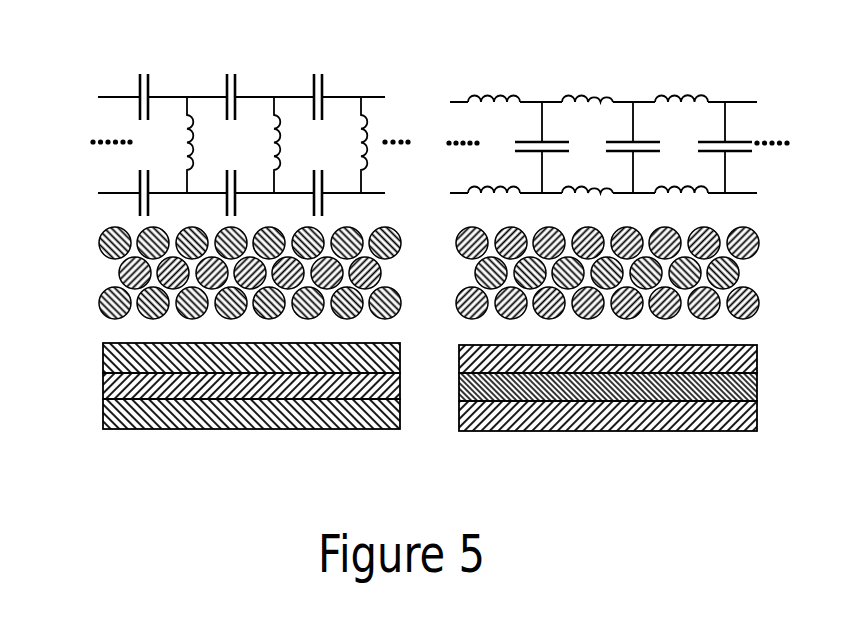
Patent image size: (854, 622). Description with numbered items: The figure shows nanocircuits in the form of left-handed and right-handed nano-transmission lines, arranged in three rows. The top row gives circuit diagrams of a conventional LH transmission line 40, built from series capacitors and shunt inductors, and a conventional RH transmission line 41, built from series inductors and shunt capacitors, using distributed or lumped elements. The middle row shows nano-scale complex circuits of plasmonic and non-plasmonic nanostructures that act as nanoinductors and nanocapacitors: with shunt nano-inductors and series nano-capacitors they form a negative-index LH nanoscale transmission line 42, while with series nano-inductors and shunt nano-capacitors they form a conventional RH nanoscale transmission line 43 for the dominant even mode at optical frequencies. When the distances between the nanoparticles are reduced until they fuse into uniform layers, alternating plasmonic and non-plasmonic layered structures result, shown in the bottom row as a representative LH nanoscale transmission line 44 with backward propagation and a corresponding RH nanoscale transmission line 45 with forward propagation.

The left-handed transmission line 40 is at (279, 68).
The right-handed transmission line 41 is at (637, 72).
The left-handed nanoscale transmission line 42 is at (88, 306).
The right-handed nanoscale transmission line 43 is at (778, 308).
The LH nanoscale transmission line 44 is at (92, 388).
The RH nanoscale transmission line 45 is at (773, 413).